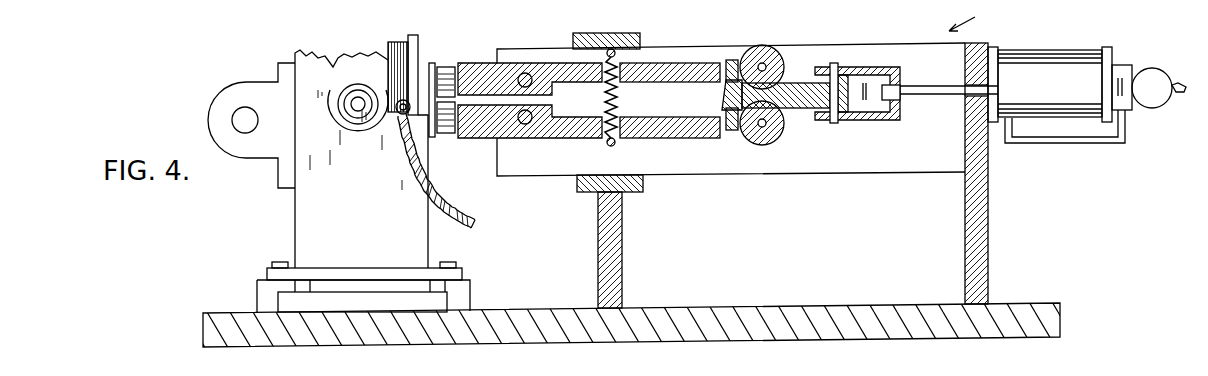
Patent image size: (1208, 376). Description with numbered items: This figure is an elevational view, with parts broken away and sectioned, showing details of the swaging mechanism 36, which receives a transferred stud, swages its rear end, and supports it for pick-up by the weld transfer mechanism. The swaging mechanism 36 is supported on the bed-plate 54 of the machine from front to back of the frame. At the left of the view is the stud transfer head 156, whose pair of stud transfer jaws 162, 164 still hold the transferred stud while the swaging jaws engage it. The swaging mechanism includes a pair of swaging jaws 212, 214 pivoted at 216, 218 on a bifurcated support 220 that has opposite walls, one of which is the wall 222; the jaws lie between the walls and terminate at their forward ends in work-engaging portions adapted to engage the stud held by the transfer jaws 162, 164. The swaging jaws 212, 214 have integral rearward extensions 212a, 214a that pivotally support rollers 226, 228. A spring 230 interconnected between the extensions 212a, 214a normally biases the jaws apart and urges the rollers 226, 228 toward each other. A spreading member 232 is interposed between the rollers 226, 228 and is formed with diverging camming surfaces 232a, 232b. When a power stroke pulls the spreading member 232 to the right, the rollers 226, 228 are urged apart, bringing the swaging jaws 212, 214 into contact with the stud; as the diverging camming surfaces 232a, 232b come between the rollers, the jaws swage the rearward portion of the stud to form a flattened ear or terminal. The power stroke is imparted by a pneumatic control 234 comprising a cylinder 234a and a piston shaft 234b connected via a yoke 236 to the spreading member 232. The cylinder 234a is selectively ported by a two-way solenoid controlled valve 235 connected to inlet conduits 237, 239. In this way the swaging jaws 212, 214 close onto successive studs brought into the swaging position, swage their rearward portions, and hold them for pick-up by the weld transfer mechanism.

The swaging mechanism 36 is at (975, 16).
The bed-plate 54 is at (796, 309).
The stud transfer head 156 is at (431, 68).
The stud transfer jaw 162 is at (446, 70).
The stud transfer jaw 164 is at (446, 134).
The swaging jaw 212 is at (486, 62).
The rearward extension 212a is at (701, 62).
The swaging jaw 214 is at (478, 139).
The rearward extension 214a is at (678, 139).
The pivot 216 is at (526, 73).
The pivot 218 is at (523, 125).
The bifurcated support 220 is at (832, 45).
The wall 222 is at (881, 48).
The roller 226 is at (768, 47).
The roller 228 is at (772, 142).
The spring 230 is at (619, 102).
The spreading member 232 is at (812, 110).
The diverging camming surface 232a is at (735, 59).
The diverging camming surface 232b is at (734, 131).
The pneumatic control 234 is at (1073, 57).
The cylinder 234a is at (1032, 57).
The piston shaft 234b is at (945, 96).
The two-way solenoid controlled valve 235 is at (1158, 68).
The yoke 236 is at (893, 66).
The inlet conduit 237 is at (1182, 94).
The inlet conduit 239 is at (1048, 144).